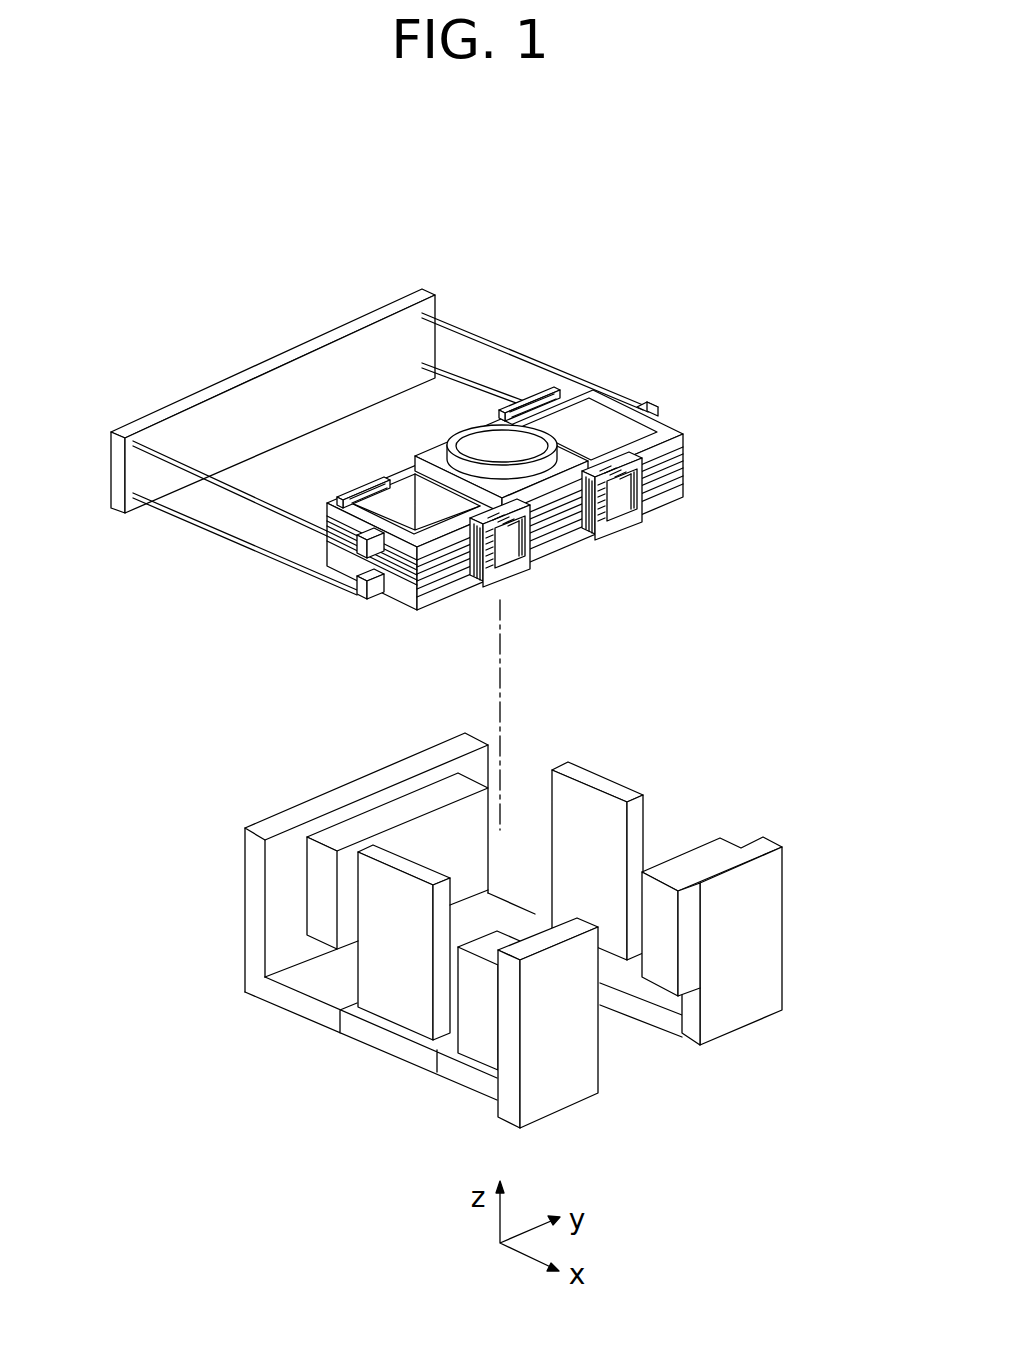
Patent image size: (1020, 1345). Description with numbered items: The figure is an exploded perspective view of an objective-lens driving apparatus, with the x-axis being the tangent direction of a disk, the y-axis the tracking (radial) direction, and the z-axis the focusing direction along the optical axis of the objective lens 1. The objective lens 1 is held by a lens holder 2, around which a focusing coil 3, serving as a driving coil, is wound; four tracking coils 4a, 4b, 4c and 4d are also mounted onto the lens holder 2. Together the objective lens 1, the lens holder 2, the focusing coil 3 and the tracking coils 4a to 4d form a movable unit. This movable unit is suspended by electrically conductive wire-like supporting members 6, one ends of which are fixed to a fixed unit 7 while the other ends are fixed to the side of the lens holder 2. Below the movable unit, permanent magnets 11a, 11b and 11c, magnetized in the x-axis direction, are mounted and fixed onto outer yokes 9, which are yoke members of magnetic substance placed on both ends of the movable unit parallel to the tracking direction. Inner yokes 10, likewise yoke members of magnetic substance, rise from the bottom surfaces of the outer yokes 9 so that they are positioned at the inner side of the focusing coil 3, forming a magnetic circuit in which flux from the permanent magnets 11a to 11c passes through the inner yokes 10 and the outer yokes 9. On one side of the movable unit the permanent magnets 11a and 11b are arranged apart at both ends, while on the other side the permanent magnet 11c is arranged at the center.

The objective lens 1 is at (497, 437).
The lens holder 2 is at (668, 416).
The focusing coil 3 is at (688, 460).
The tracking coil 4a is at (521, 578).
The tracking coil 4b is at (641, 527).
The tracking coil 4c is at (366, 482).
The tracking coil 4d is at (548, 400).
The wire-like supporting member 6 is at (180, 514).
The fixed unit 7 is at (256, 398).
The outer yoke 9 is at (768, 917).
The inner yoke 10 is at (388, 992).
The permanent magnet 11a is at (478, 1020).
The permanent magnet 11b is at (718, 845).
The permanent magnet 11c is at (345, 830).